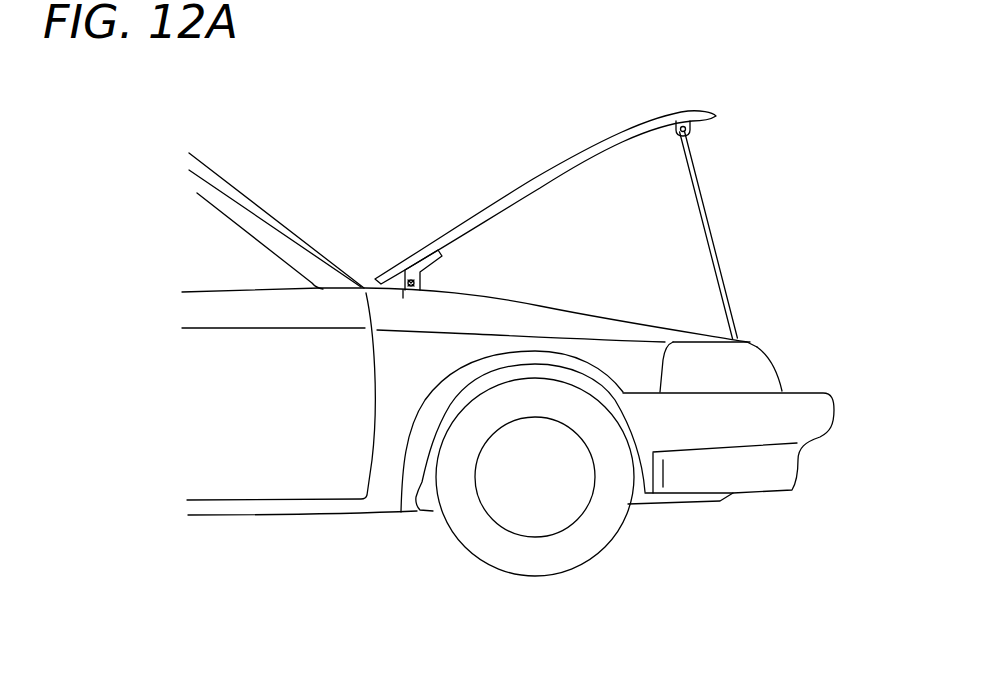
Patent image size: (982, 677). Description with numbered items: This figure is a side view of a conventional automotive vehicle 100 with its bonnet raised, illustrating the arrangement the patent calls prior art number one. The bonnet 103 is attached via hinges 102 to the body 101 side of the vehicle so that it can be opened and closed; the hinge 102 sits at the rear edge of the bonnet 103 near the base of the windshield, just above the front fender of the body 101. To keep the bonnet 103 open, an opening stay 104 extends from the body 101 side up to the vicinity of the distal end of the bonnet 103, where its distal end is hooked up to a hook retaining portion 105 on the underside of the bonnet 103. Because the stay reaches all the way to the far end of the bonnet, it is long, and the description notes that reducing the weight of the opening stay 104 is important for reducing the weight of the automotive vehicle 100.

The automotive vehicle 100 is at (393, 134).
The body 101 is at (538, 317).
The hinge 102 is at (420, 274).
The bonnet 103 is at (530, 180).
The opening stay 104 is at (715, 243).
The hook retaining portion 105 is at (692, 130).